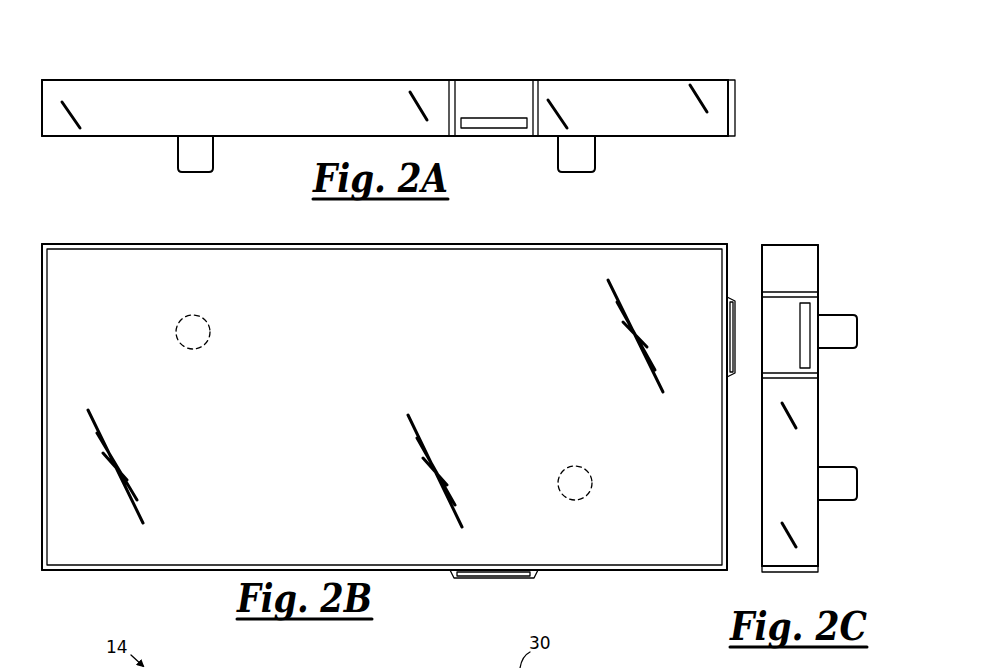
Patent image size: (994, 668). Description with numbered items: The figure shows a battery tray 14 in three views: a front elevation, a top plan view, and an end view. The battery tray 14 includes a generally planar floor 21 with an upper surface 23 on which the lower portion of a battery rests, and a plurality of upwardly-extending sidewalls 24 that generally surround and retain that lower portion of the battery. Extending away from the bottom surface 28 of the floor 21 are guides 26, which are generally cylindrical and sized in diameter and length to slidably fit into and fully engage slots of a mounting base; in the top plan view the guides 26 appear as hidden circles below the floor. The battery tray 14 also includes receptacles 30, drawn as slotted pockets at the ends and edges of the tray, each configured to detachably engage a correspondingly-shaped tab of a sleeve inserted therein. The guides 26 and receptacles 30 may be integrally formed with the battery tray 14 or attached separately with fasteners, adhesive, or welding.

In FIG. 2A, the battery tray 14 is at (112, 57).
In FIG. 2B, the battery tray 14 is at (130, 236).
In FIG. 2C, the battery tray 14 is at (788, 228).
In FIG. 2A, the floor 21 is at (637, 141).
In FIG. 2C, the floor 21 is at (821, 257).
In FIG. 2B, the upper surface 23 is at (449, 343).
In FIG. 2A, the sidewalls 24 is at (262, 115).
In FIG. 2B, the sidewalls 24 is at (523, 244).
In FIG. 2C, the sidewalls 24 is at (798, 470).
In FIG. 2A, the guide 26 is at (178, 154).
In FIG. 2B, the guide 26 is at (211, 330).
In FIG. 2C, the guide 26 is at (835, 315).
In FIG. 2A, the bottom surface 28 is at (252, 138).
In FIG. 2C, the bottom surface 28 is at (819, 406).
In FIG. 2A, the receptacle 30 is at (497, 92).
In FIG. 2B, the receptacle 30 is at (733, 297).
In FIG. 2C, the receptacle 30 is at (818, 571).